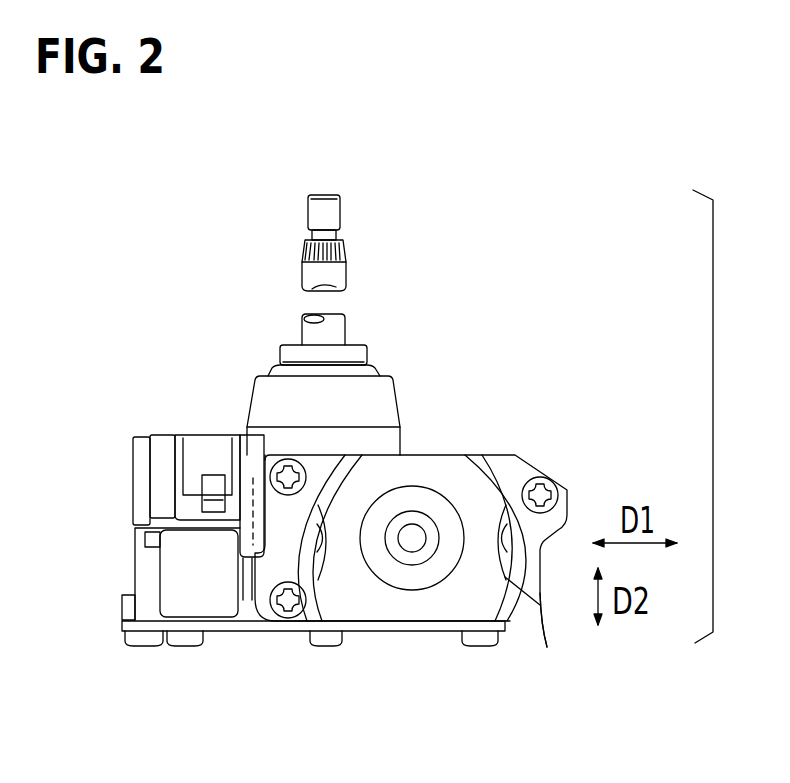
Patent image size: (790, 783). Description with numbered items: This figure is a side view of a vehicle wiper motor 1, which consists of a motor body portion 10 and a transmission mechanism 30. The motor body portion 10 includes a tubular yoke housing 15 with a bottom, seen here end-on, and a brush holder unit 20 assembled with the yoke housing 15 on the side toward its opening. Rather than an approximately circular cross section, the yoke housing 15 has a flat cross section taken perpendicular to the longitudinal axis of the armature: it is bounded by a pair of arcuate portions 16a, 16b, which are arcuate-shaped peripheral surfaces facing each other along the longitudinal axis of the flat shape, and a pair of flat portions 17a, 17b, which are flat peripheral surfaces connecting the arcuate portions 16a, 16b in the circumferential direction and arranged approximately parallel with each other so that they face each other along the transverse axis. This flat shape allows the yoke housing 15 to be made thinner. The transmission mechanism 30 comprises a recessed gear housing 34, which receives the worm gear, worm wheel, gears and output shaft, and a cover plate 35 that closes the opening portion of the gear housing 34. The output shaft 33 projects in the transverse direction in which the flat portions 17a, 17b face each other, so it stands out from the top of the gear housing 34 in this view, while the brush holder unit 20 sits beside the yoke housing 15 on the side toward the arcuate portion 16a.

The motor 1 is at (138, 258).
The motor body portion 10 is at (369, 537).
The yoke housing 15 is at (452, 453).
The arcuate portion 16a is at (308, 632).
The arcuate portion 16b is at (547, 647).
The flat portion 17a is at (418, 453).
The flat portion 17b is at (413, 628).
The brush holder unit 20 is at (135, 576).
The transmission mechanism 30 is at (261, 364).
The output shaft 33 is at (348, 268).
The gear housing 34 is at (262, 410).
The cover plate 35 is at (232, 632).